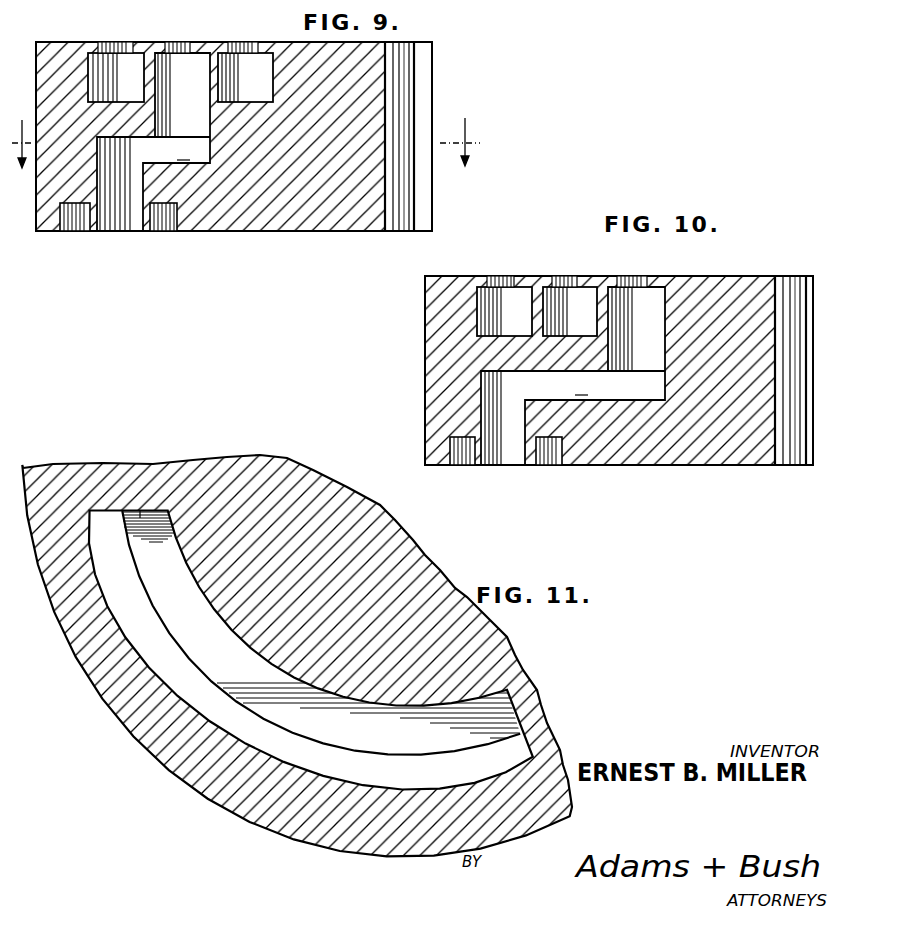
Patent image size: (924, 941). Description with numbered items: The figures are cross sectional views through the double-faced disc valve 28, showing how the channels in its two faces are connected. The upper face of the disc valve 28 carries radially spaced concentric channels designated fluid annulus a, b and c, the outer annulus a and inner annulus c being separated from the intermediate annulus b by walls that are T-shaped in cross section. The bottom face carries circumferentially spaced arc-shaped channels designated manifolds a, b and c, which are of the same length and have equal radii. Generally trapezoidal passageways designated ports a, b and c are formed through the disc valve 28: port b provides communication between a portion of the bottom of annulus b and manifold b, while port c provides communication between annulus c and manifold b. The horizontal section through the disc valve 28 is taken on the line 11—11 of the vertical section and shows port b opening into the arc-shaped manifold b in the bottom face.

In FIG. 9, the double-faced disc valve 28 is at (325, 232).
In FIG. 10, the double-faced disc valve 28 is at (708, 450).
In FIG. 11, the double-faced disc valve 28 is at (421, 549).
In FIG. 9, the fluid annulus, manifold and port a is at (113, 50).
In FIG. 10, the fluid annulus, manifold and port a is at (498, 285).
In FIG. 9, the fluid annulus, manifold and port b is at (181, 50).
In FIG. 10, the fluid annulus, manifold and port b is at (572, 285).
In FIG. 11, the fluid annulus, manifold and port b is at (147, 500).
In FIG. 9, the fluid annulus, manifold and port c is at (240, 50).
In FIG. 10, the fluid annulus, manifold and port c is at (650, 285).
In FIG. 9, the section line 11- 11 is at (246, 132).